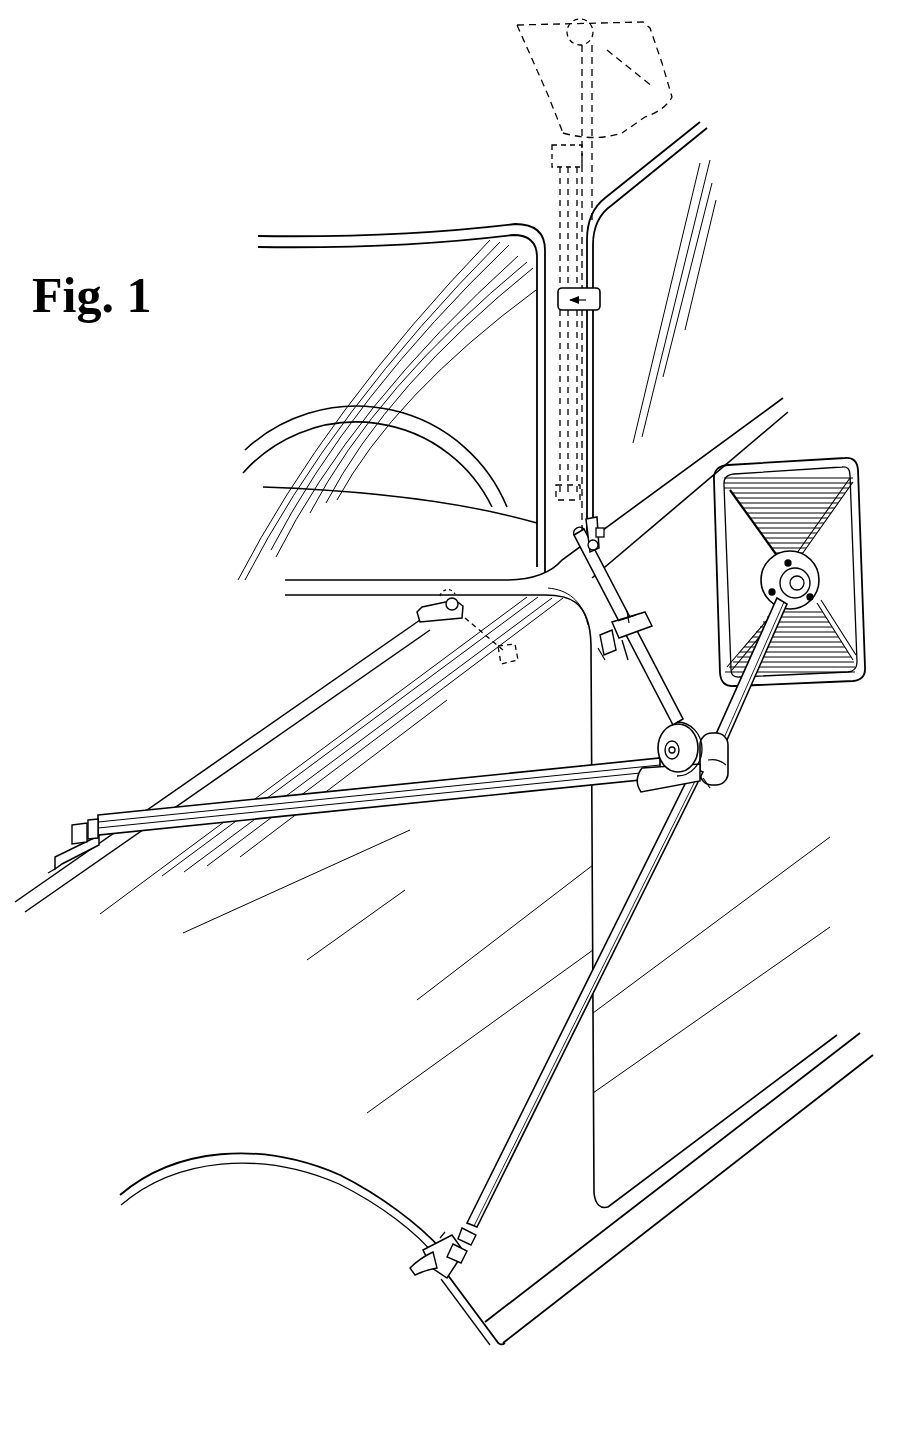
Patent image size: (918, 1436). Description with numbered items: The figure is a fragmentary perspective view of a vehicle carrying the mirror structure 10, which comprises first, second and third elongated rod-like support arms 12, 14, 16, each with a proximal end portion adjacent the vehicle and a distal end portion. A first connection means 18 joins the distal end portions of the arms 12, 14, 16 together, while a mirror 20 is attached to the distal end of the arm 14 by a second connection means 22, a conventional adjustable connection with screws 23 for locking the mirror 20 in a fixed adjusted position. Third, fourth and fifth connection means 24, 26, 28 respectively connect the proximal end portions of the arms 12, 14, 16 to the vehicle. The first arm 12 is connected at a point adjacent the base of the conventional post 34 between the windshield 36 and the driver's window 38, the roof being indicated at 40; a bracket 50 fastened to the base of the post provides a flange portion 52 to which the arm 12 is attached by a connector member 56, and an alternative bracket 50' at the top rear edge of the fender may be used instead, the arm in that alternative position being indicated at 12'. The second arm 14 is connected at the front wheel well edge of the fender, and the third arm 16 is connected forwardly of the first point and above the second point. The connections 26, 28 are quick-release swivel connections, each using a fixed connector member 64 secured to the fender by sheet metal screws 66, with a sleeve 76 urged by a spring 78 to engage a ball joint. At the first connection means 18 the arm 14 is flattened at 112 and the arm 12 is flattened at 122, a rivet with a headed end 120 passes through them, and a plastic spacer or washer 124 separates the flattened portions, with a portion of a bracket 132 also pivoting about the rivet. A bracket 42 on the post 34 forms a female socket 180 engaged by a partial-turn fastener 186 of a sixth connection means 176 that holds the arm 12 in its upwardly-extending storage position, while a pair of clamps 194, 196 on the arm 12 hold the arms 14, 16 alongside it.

The mirror structure 10 is at (660, 522).
The first support arm 12 is at (598, 385).
The upper arm in alternate position 12' is at (499, 657).
The second support arm 14 is at (609, 127).
The third support arm 16 is at (557, 200).
The first connection means 18 is at (740, 761).
The mirror 20 is at (657, 65).
The second connection means 22 is at (555, 50).
The screws 23 is at (791, 560).
The third connection means 24 is at (581, 586).
The fourth connection means 26 is at (447, 1190).
The fifth connection means 28 is at (84, 872).
The post 34 is at (545, 400).
The windshield 36 is at (352, 346).
The driver's window 38 is at (648, 211).
The roof 40 is at (412, 216).
The bracket 42 is at (600, 300).
The bracket 50 is at (610, 516).
The bracket 50' is at (440, 626).
The flange portion 52 is at (599, 547).
The connector member 56 is at (605, 533).
The fixed connector member 64 is at (68, 842).
The sheet metal screws 66 is at (414, 1268).
The sleeve 76 is at (79, 824).
The spring 78 is at (97, 820).
The flattened portion 112 is at (712, 772).
The headed end 120 is at (665, 749).
The flattened portion 122 is at (684, 727).
The plastic spacer or washer 124 is at (706, 790).
The bracket 132 is at (660, 790).
The sixth connection means 176 is at (597, 654).
The female socket 180 is at (576, 310).
The partial-turn fastener 186 is at (629, 662).
The clamp 194 is at (646, 630).
The clamp 196 is at (612, 656).